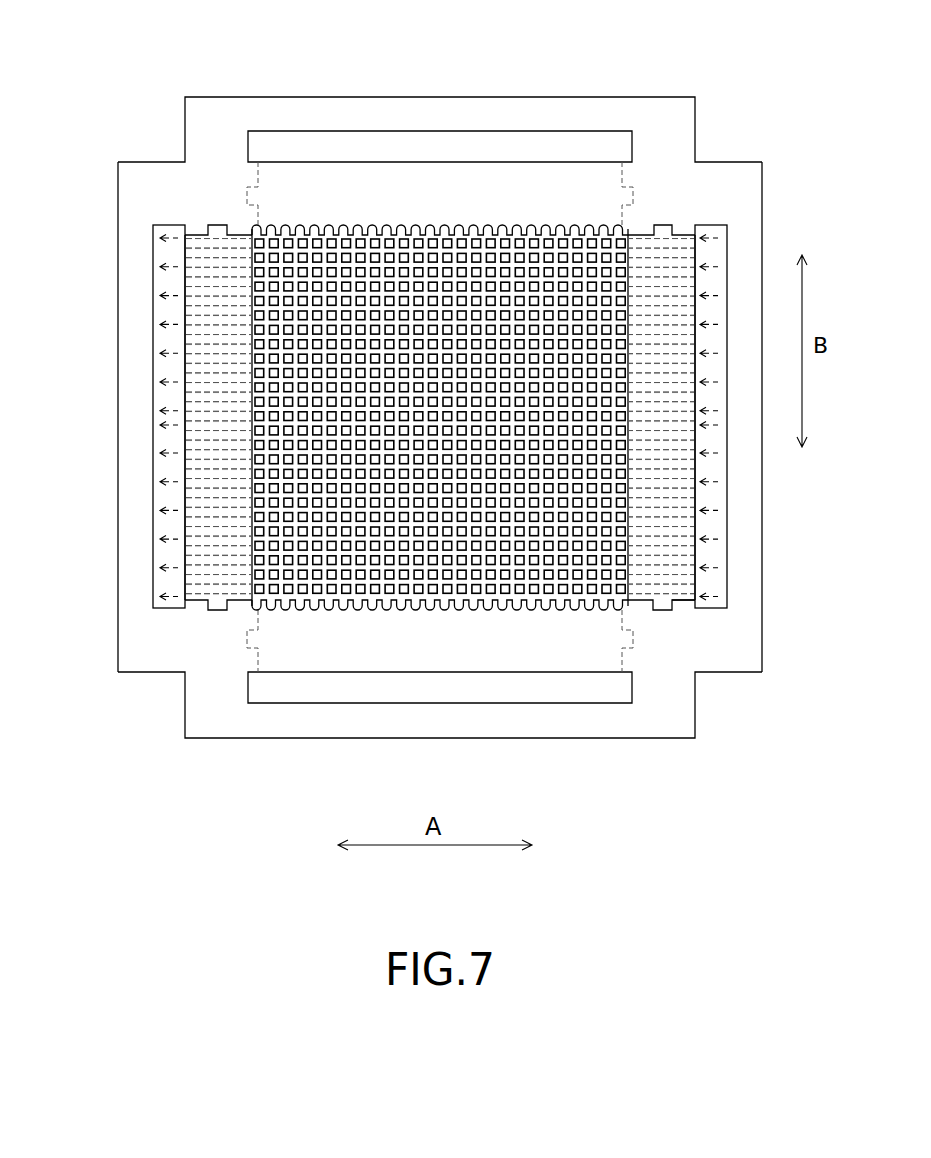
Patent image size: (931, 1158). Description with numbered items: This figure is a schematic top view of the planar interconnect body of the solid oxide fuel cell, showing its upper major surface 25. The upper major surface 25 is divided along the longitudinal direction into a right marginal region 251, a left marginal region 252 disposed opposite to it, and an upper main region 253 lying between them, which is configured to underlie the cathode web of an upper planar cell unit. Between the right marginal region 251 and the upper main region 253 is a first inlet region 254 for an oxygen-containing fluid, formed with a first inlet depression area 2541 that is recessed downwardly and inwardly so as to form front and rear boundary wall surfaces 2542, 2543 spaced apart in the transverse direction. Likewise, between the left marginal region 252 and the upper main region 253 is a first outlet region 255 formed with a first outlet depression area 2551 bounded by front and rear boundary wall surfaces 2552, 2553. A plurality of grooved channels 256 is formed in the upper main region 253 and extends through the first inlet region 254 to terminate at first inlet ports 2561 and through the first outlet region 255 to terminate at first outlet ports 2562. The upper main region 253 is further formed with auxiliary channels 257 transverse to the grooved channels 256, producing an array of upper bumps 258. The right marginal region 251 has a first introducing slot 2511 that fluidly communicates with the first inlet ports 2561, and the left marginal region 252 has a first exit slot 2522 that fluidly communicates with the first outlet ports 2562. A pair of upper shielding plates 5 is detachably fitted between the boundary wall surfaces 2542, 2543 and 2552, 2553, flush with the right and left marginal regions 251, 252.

The upper major surface 25 is at (670, 130).
The right marginal region 251 is at (723, 640).
The left marginal region 252 is at (157, 640).
The first introducing slot 2511 is at (710, 522).
The first exit slot 2522 is at (170, 522).
The upper main region 253 is at (418, 226).
The first inlet region 254 is at (700, 577).
The first inlet depression area 2541 is at (697, 466).
The front boundary wall surface 2542 is at (642, 602).
The rear boundary wall surface 2543 is at (641, 222).
The first outlet region 255 is at (197, 577).
The first outlet depression area 2551 is at (197, 474).
The front boundary wall surface 2552 is at (238, 602).
The rear boundary wall surface 2553 is at (228, 225).
The grooved channels 256 is at (318, 277).
The first inlet ports 2561 is at (697, 553).
The first outlet ports 2562 is at (185, 553).
The auxiliary channels 257 is at (553, 265).
The upper bumps 258 is at (607, 233).
The upper shielding plates 5 is at (680, 602).